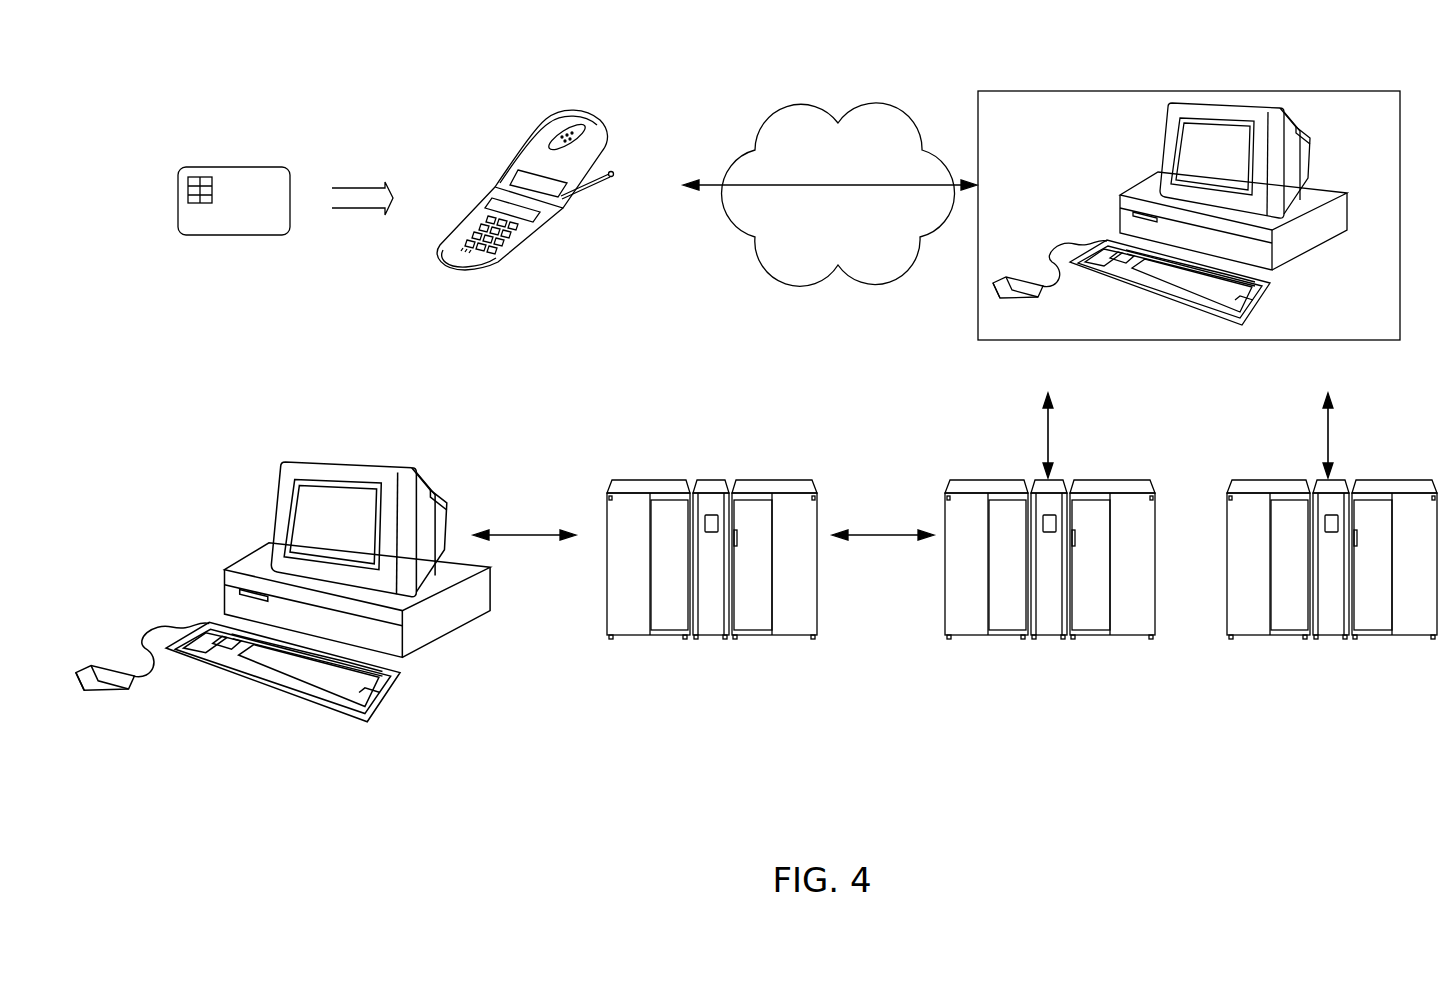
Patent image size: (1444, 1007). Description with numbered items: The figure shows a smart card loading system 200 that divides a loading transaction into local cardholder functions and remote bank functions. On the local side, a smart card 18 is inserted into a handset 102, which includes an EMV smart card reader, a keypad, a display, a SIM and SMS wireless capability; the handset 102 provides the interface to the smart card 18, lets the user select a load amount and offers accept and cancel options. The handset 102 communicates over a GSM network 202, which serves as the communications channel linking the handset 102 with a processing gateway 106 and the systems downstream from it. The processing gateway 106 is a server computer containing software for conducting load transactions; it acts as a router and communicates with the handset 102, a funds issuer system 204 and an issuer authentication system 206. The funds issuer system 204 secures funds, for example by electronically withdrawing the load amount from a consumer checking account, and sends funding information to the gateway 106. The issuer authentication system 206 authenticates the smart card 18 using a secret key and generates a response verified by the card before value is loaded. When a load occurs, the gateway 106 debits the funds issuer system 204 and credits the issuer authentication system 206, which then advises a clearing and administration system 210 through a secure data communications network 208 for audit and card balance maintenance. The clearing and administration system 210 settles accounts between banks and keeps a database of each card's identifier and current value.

The smart card 18 is at (236, 235).
The handset 102 is at (540, 233).
The processing gateway 106 is at (1150, 91).
The smart card loading system 200 is at (510, 812).
The GSM network 202 is at (805, 282).
The funds issuer system 204 is at (1407, 478).
The issuer authentication system 206 is at (972, 478).
The data communications network 208 is at (708, 480).
The clearing and administration system 210 is at (350, 462).